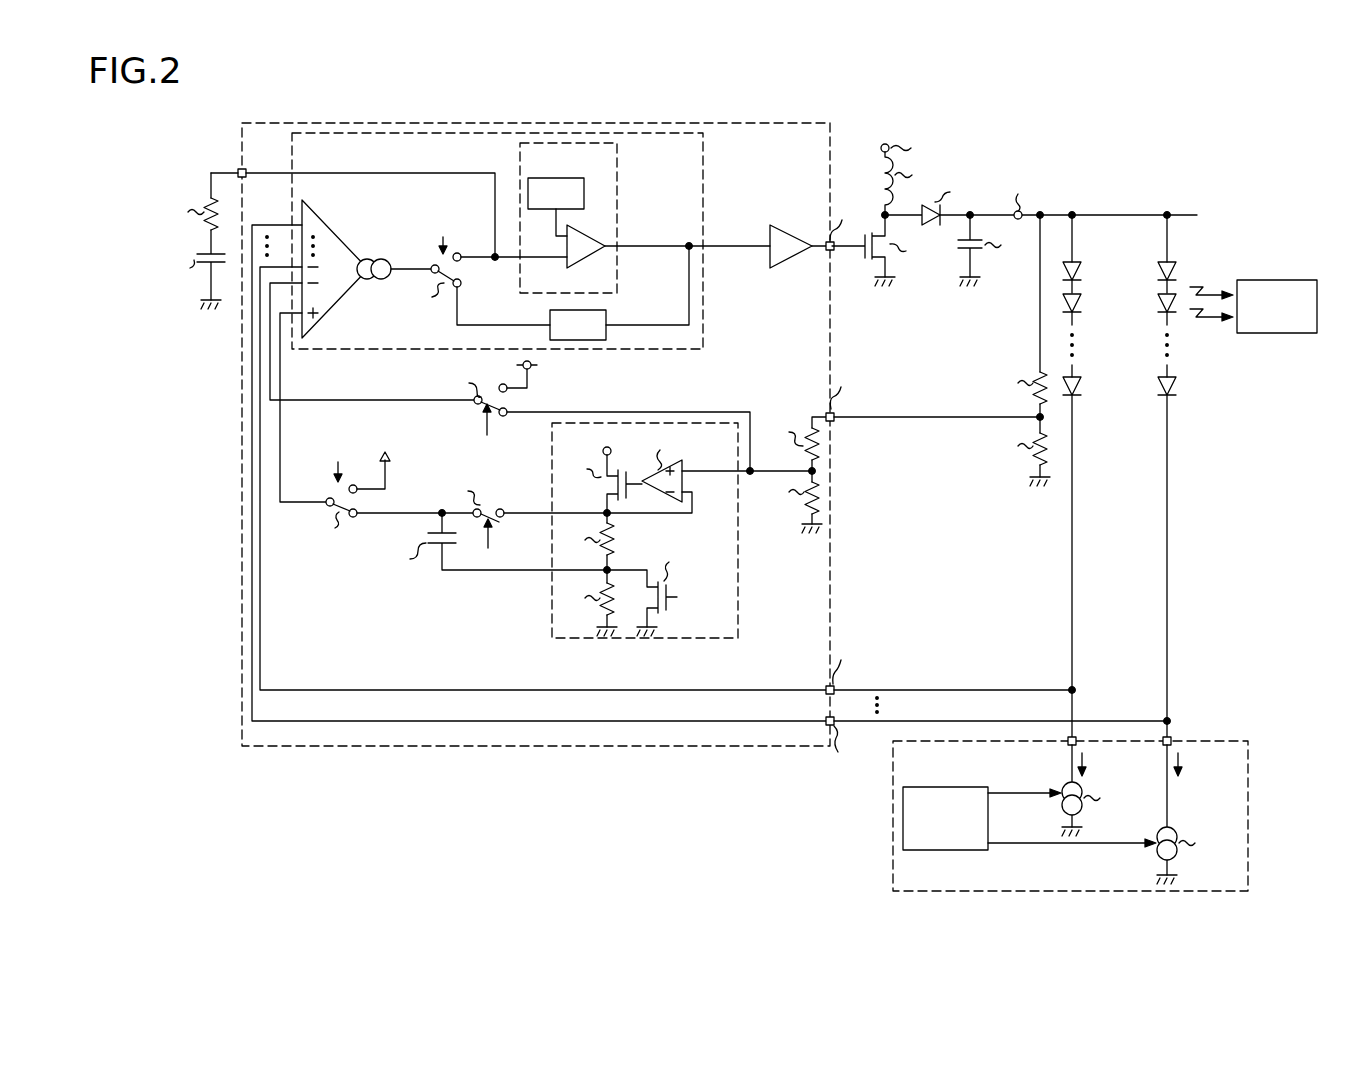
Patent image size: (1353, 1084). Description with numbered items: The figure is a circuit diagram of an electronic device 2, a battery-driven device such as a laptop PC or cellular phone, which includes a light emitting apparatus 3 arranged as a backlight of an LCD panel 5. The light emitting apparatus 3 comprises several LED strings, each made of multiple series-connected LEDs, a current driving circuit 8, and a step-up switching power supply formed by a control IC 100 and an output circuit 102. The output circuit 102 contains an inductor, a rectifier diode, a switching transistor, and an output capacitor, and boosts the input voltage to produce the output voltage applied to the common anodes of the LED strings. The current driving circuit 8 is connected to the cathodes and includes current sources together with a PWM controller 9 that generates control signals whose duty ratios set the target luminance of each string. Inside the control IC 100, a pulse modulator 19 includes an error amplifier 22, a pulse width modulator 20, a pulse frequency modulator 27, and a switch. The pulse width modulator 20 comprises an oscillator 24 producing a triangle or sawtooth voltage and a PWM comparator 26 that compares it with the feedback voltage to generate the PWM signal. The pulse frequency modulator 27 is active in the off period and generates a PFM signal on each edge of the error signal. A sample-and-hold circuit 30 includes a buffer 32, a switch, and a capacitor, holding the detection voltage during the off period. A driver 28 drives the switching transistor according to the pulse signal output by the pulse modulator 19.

The electronic device 2 is at (1322, 163).
The light emitting apparatus 3 is at (1144, 178).
The LCD panel 5 is at (1290, 280).
The current driving circuit 8 is at (1248, 815).
The PWM controller 9 is at (947, 851).
The pulse modulator 19 is at (703, 165).
The pulse width modulator 20 is at (617, 165).
The error amplifier 22 is at (336, 232).
The oscillator 24 is at (556, 178).
The PWM comparator 26 is at (590, 258).
The pulse frequency modulator 27 is at (602, 306).
The driver 28 is at (788, 262).
The sample-and-hold circuit 30 is at (755, 643).
The buffer 32 is at (738, 580).
The control IC 100 is at (830, 568).
The output circuit 102 is at (997, 290).